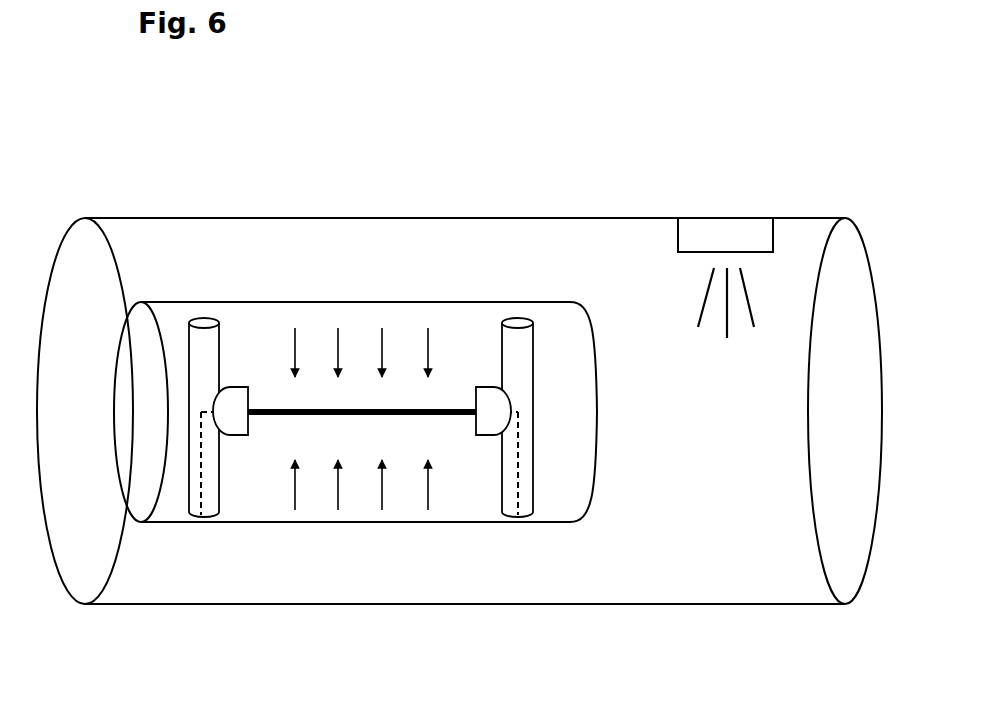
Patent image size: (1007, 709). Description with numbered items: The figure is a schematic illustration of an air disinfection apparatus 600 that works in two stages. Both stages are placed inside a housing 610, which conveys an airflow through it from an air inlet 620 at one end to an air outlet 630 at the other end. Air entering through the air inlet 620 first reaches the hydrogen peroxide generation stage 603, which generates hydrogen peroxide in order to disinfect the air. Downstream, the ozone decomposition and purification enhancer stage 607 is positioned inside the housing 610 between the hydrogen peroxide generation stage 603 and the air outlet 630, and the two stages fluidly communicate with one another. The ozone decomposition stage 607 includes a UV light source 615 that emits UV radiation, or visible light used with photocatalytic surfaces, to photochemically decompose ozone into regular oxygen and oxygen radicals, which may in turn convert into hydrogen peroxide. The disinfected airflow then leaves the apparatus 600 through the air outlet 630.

The air disinfection apparatus 600 is at (431, 78).
The hydrogen peroxide generation stage 603 is at (270, 278).
The ozone decomposition and purification enhancer stage 607 is at (634, 234).
The housing 610 is at (381, 217).
The UV light source 615 is at (726, 217).
The air inlet 620 is at (77, 392).
The air outlet 630 is at (859, 338).